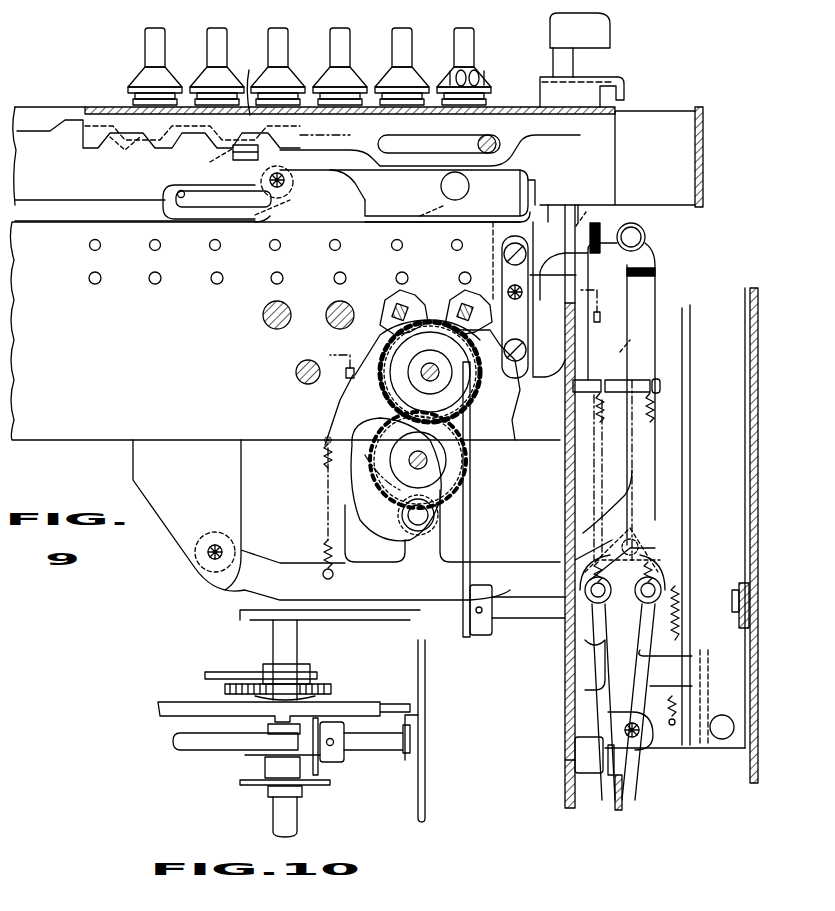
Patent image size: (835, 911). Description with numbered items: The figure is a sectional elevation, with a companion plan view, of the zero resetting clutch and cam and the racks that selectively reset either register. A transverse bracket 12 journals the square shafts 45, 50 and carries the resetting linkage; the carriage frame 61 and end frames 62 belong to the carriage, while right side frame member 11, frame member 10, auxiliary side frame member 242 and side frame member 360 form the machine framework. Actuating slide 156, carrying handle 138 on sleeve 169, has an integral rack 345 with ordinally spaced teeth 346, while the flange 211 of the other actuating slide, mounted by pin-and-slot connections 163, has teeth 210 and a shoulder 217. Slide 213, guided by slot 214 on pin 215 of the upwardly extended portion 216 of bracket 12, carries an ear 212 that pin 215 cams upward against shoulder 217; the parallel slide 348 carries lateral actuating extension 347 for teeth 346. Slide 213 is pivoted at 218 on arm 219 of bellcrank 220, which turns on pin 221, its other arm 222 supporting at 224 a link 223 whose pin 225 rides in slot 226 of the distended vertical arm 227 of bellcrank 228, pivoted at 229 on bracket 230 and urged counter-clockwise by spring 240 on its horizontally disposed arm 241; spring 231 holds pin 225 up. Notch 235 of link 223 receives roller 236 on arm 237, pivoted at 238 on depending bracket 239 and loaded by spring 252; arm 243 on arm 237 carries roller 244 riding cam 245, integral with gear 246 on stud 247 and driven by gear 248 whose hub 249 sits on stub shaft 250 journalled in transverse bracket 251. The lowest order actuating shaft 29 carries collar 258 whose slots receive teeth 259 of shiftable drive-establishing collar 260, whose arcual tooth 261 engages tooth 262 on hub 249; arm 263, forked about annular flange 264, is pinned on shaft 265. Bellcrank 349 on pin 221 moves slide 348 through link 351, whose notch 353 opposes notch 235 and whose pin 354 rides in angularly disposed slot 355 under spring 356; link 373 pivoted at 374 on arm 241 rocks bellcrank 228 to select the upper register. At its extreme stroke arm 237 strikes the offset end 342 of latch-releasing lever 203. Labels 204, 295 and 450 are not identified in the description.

In FIG. 9, the frame member 10 is at (593, 313).
In FIG. 9, the right side frame member 11 is at (565, 478).
In FIG. 10, the right side frame member 11 is at (425, 692).
In FIG. 9, the transverse bracket 12 is at (287, 328).
In FIG. 10, the transverse bracket 12 is at (160, 707).
In FIG. 9, the lowest order actuating shaft 29 is at (500, 383).
In FIG. 10, the lowest order actuating shaft 29 is at (297, 815).
In FIG. 9, the square shaft 45 is at (448, 297).
In FIG. 9, the square shaft 50 is at (468, 250).
In FIG. 9, the carriage frame 61 is at (658, 118).
In FIG. 9, the end frame 62 is at (703, 162).
In FIG. 9, the handle 138 is at (604, 26).
In FIG. 9, the actuating slide 156 is at (533, 80).
In FIG. 9, the pin-and-slot connection 163 is at (496, 151).
In FIG. 9, the sleeve 169 is at (568, 61).
In FIG. 9, the latch-releasing lever 203 is at (620, 800).
In FIG. 9, the spacer 204 is at (614, 775).
In FIG. 9, the teeth 210 is at (162, 140).
In FIG. 9, the flange 211 is at (430, 161).
In FIG. 9, the ear 212 is at (244, 160).
In FIG. 9, the slide 213 is at (432, 193).
In FIG. 9, the slot 214 is at (174, 193).
In FIG. 9, the pin 215 is at (287, 185).
In FIG. 9, the upwardly extended portion 216 is at (322, 181).
In FIG. 9, the shoulder 217 is at (250, 83).
In FIG. 9, the pivot 218 is at (469, 186).
In FIG. 9, the arm 219 is at (512, 187).
In FIG. 9, the bellcrank 220 is at (569, 279).
In FIG. 9, the pin 221 is at (515, 300).
In FIG. 9, the arm 222 is at (576, 252).
In FIG. 9, the link 223 is at (650, 290).
In FIG. 9, the pivotal connection 224 is at (641, 237).
In FIG. 9, the pin 225 is at (660, 590).
In FIG. 9, the slot 226 is at (681, 649).
In FIG. 9, the distended vertical arm 227 is at (660, 634).
In FIG. 9, the bellcrank 228 is at (686, 686).
In FIG. 9, the pivot 229 is at (612, 762).
In FIG. 9, the bracket 230 is at (635, 745).
In FIG. 9, the spring 231 is at (660, 403).
In FIG. 9, the notch 235 is at (660, 566).
In FIG. 9, the roller 236 is at (670, 545).
In FIG. 9, the arm 237 is at (484, 575).
In FIG. 9, the pivot 238 is at (207, 560).
In FIG. 9, the depending bracket 239 is at (241, 484).
In FIG. 9, the spring 240 is at (668, 705).
In FIG. 9, the horizontally disposed arm 241 is at (692, 740).
In FIG. 9, the auxiliary side frame member 242 is at (690, 425).
In FIG. 9, the arm 243 is at (402, 548).
In FIG. 9, the roller 244 is at (404, 516).
In FIG. 10, the cam 245 is at (245, 675).
In FIG. 9, the gear 246 is at (436, 450).
In FIG. 9, the stud 247 is at (428, 463).
In FIG. 9, the gear 248 is at (402, 405).
In FIG. 10, the hub 249 is at (305, 694).
In FIG. 10, the stub shaft 250 is at (290, 646).
In FIG. 10, the transverse bracket 251 is at (340, 616).
In FIG. 9, the spring 252 is at (325, 548).
In FIG. 10, the collar 258 is at (245, 783).
In FIG. 10, the teeth 259 is at (280, 768).
In FIG. 10, the shiftable drive-establishing collar 260 is at (270, 746).
In FIG. 10, the arcual tooth 261 is at (268, 727).
In FIG. 10, the tooth 262 is at (268, 714).
In FIG. 9, the arm 263 is at (470, 511).
In FIG. 10, the arm 263 is at (318, 766).
In FIG. 9, the annular flange 264 is at (400, 378).
In FIG. 10, the annular flange 264 is at (250, 756).
In FIG. 9, the shaft 265 is at (510, 620).
In FIG. 10, the shaft 265 is at (356, 746).
In FIG. 9, the cam 295 is at (368, 480).
In FIG. 9, the rearwardly extended offset end 342 is at (575, 660).
In FIG. 9, the rack 345 is at (64, 101).
In FIG. 9, the teeth 346 is at (124, 153).
In FIG. 9, the lateral actuating extension 347 is at (209, 159).
In FIG. 9, the slide 348 is at (447, 212).
In FIG. 9, the bellcrank 349 is at (595, 213).
In FIG. 9, the link 351 is at (572, 528).
In FIG. 9, the notch 353 is at (605, 553).
In FIG. 9, the pin 354 is at (590, 590).
In FIG. 9, the angularly disposed slot 355 is at (598, 640).
In FIG. 9, the spring 356 is at (597, 408).
In FIG. 9, the side frame member 360 is at (750, 543).
In FIG. 9, the link 373 is at (745, 662).
In FIG. 9, the pivot 374 is at (722, 740).
In FIG. 9, the bar 450 is at (512, 118).